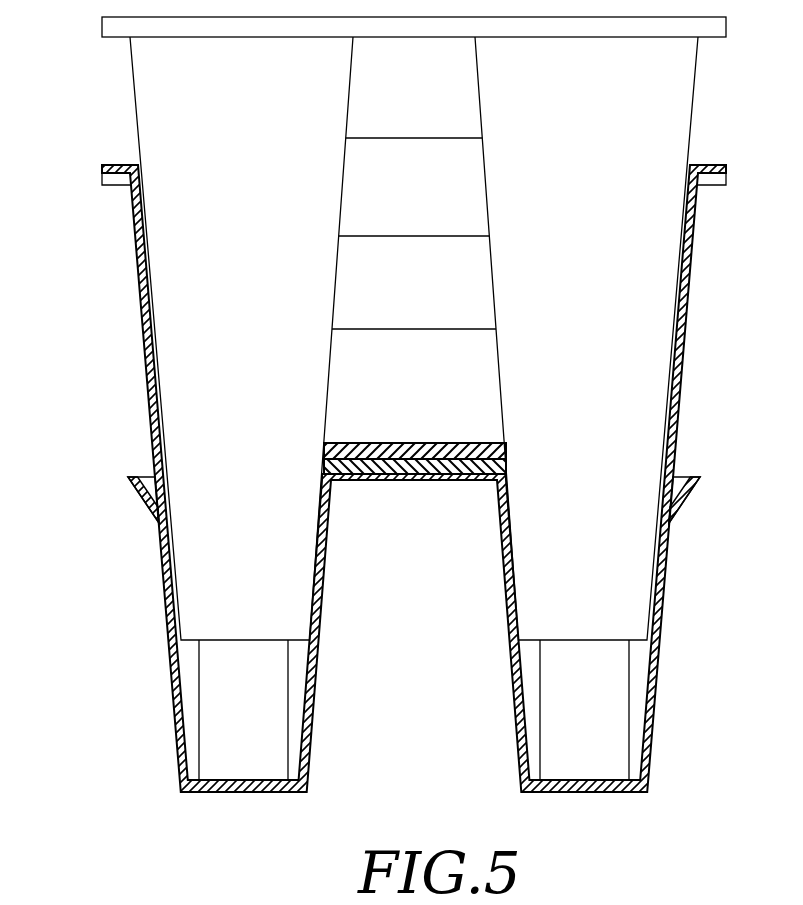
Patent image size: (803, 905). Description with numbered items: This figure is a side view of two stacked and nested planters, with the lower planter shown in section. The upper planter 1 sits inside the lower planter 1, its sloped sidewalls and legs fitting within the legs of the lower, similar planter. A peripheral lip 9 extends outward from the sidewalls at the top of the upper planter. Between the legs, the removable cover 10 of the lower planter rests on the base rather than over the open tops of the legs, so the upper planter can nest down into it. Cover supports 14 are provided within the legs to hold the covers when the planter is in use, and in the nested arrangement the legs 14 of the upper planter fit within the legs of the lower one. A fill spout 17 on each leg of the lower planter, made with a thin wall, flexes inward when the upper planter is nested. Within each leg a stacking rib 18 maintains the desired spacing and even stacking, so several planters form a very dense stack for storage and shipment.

The planter 1 is at (82, 78).
The peripheral lip 9 is at (717, 26).
The removable cover 10 is at (368, 465).
The cover supports 14 is at (165, 490).
The fill spout 17 is at (130, 478).
The stacking rib 18 is at (290, 669).